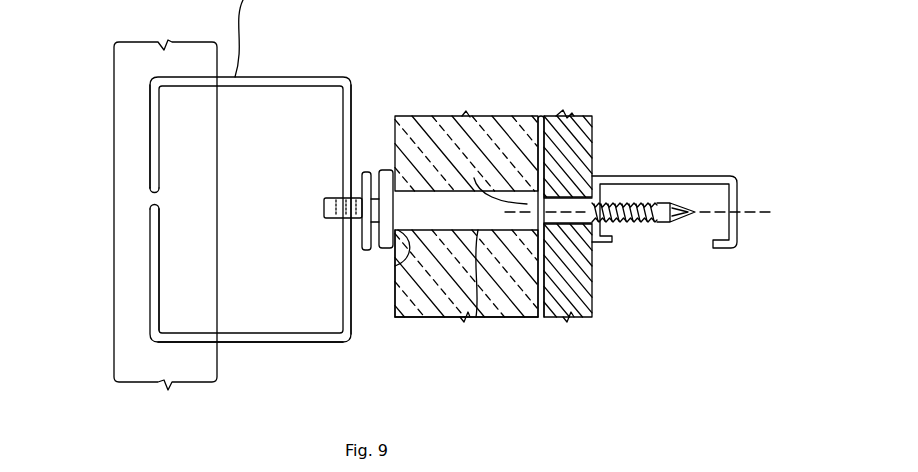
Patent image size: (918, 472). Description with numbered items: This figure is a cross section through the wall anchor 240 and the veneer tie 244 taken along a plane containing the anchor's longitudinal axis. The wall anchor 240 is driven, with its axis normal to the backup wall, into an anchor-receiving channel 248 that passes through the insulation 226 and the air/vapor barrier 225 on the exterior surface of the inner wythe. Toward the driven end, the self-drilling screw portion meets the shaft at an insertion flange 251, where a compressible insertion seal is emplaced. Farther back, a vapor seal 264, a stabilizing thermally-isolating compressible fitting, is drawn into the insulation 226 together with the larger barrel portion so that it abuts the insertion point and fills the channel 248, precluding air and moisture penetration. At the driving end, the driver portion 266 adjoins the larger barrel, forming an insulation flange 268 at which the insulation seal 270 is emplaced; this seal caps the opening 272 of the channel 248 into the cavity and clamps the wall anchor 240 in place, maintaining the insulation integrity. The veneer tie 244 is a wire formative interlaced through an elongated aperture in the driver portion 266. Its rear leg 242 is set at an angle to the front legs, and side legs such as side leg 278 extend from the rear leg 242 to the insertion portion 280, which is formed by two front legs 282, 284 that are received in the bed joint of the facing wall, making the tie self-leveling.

The air/vapor barrier 225 is at (540, 115).
The insulation 226 is at (514, 318).
The wall anchor 240 is at (433, 207).
The rear leg 242 is at (353, 112).
The veneer tie 244 is at (192, 350).
The anchor-receiving channel 248 is at (476, 318).
The insertion flange 251 is at (600, 246).
The vapor seal 264 is at (476, 191).
The driver portion 266 is at (323, 211).
The insulation flange 268 is at (395, 268).
The insulation seal 270 is at (393, 173).
The opening 272 is at (381, 249).
The side leg 278 is at (246, 345).
The insertion portion 280 is at (146, 164).
The front leg 282 is at (150, 117).
The front leg 284 is at (160, 267).